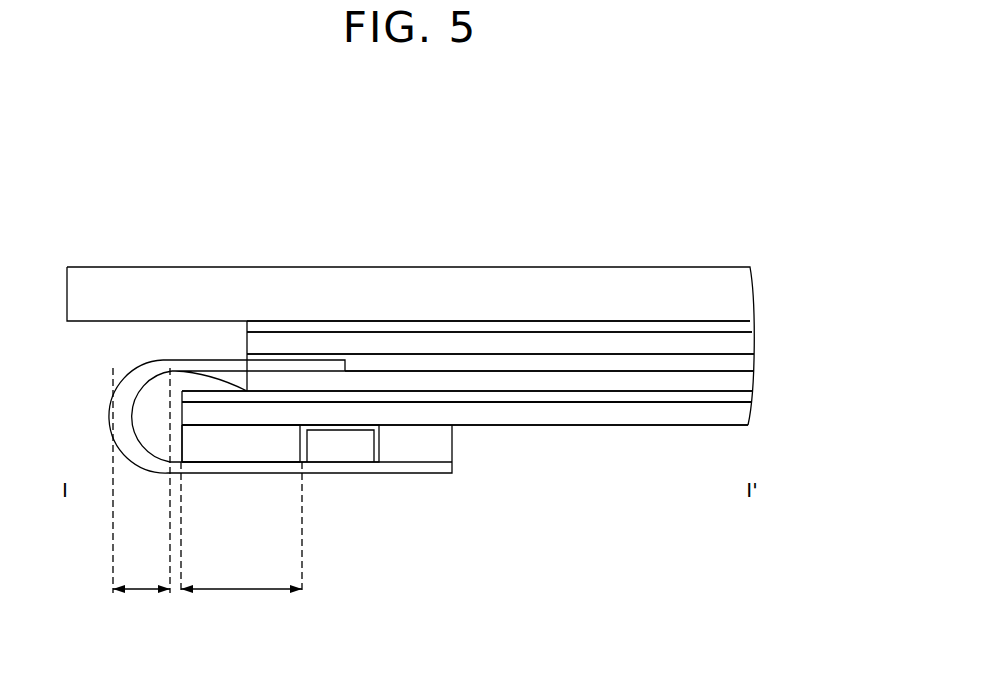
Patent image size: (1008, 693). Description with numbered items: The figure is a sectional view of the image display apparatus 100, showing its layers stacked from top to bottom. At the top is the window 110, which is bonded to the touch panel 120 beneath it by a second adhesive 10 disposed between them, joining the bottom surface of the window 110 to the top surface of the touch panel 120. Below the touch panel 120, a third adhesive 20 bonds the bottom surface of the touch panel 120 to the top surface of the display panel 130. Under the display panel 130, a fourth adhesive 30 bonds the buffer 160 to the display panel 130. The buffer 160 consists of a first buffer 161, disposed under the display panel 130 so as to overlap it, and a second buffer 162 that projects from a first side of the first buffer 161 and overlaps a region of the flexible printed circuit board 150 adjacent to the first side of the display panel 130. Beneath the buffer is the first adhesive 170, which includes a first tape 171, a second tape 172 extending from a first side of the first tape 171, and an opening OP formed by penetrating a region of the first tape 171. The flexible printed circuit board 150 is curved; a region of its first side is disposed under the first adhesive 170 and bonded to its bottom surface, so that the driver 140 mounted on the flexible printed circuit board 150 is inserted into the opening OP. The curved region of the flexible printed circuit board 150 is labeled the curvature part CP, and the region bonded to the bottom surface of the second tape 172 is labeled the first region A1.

The image display apparatus 100 is at (641, 163).
The window 110 is at (740, 288).
The second adhesive member 10 is at (740, 326).
The touch panel 120 is at (740, 345).
The third adhesive member 20 is at (740, 362).
The display panel 130 is at (740, 383).
The fourth adhesive member 30 is at (740, 398).
The buffer member 160 is at (740, 415).
The first buffer member 161 is at (348, 415).
The second buffer member 162 is at (232, 415).
The flexible printed circuit board 150 is at (157, 364).
The first adhesive member 170 is at (193, 529).
The first tape 171 is at (277, 447).
The second tape 172 is at (211, 447).
The drive unit 140 is at (338, 447).
The open part OP is at (376, 443).
The curvature part CP is at (141, 494).
The first region A1 is at (241, 541).